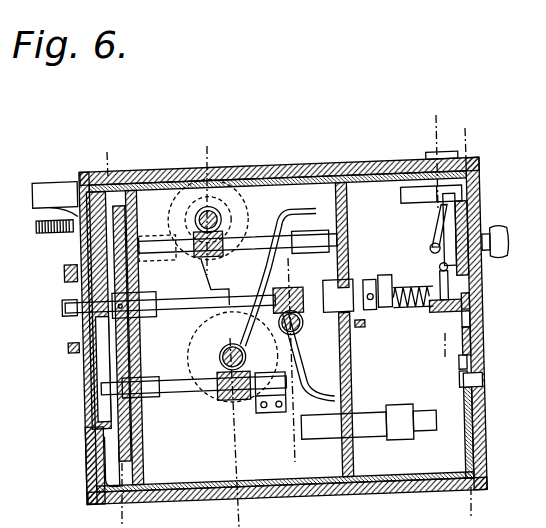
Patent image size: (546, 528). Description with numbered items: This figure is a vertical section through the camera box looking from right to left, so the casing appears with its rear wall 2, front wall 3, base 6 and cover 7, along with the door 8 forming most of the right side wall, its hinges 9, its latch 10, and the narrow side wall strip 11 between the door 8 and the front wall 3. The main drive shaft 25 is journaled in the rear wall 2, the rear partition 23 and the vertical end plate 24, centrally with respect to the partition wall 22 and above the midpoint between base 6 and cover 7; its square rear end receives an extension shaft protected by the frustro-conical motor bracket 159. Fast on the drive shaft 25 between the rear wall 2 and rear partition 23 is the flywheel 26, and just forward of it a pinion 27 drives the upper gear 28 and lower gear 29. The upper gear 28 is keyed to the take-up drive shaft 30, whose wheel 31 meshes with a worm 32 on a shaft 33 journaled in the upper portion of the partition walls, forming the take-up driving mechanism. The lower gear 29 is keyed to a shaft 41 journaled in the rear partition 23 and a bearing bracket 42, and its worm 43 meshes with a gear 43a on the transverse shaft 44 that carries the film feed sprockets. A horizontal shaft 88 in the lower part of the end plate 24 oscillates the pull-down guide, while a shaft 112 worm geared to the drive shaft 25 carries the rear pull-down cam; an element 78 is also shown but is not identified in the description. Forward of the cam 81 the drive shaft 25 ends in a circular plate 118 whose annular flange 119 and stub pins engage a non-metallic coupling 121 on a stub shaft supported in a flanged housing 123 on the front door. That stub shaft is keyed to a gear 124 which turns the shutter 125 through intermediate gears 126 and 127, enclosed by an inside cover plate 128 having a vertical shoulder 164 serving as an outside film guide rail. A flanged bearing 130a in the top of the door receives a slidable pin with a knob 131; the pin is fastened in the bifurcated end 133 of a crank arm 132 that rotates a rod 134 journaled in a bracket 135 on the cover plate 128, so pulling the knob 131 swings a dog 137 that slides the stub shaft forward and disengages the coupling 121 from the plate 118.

The rear wall 2 is at (85, 483).
The front wall 3 is at (486, 423).
The base 6 is at (370, 493).
The cover 7 is at (125, 152).
The door 8 is at (228, 146).
The hinges 9 is at (297, 258).
The latch 10 is at (445, 128).
The side wall strip 11 is at (455, 115).
The partition wall 22 is at (300, 193).
The rear partition 23 is at (145, 470).
The vertical end plate 24 is at (356, 470).
The main drive shaft 25 is at (168, 303).
The flywheel 26 is at (88, 402).
The pinion 27 is at (127, 322).
The upper gear 28 is at (80, 275).
The lower gear 29 is at (87, 457).
The take-up drive shaft 30 is at (222, 252).
The wheel 31 is at (239, 269).
The worm 32 is at (222, 213).
The shaft 33 is at (220, 220).
The shaft 41 is at (175, 390).
The bearing bracket 42 is at (270, 413).
The worm 43 is at (222, 402).
The gear 43a is at (247, 357).
The transverse shaft 44 is at (240, 348).
The lever 78 is at (361, 323).
The cam 81 is at (361, 273).
The horizontal shaft 88 is at (428, 423).
The shaft 112 is at (293, 335).
The circular plate 118 is at (373, 283).
The annular flange 119 is at (381, 313).
The non-metallic coupling 121 is at (391, 280).
The flanged housing 123 is at (445, 313).
The gear 124 is at (478, 302).
The shutter 125 is at (480, 322).
The intermediate gear 126 is at (481, 352).
The intermediate gear 127 is at (483, 380).
The inside cover plate 128 is at (466, 380).
The flanged bearing 130a is at (478, 215).
The knob 131 is at (507, 250).
The crank arm 132 is at (470, 212).
The bifurcated end 133 is at (433, 247).
The rod 134 is at (438, 223).
The bracket 135 is at (480, 190).
The dog 137 is at (465, 265).
The motor bracket 159 is at (73, 355).
The vertical shoulder 164 is at (460, 367).